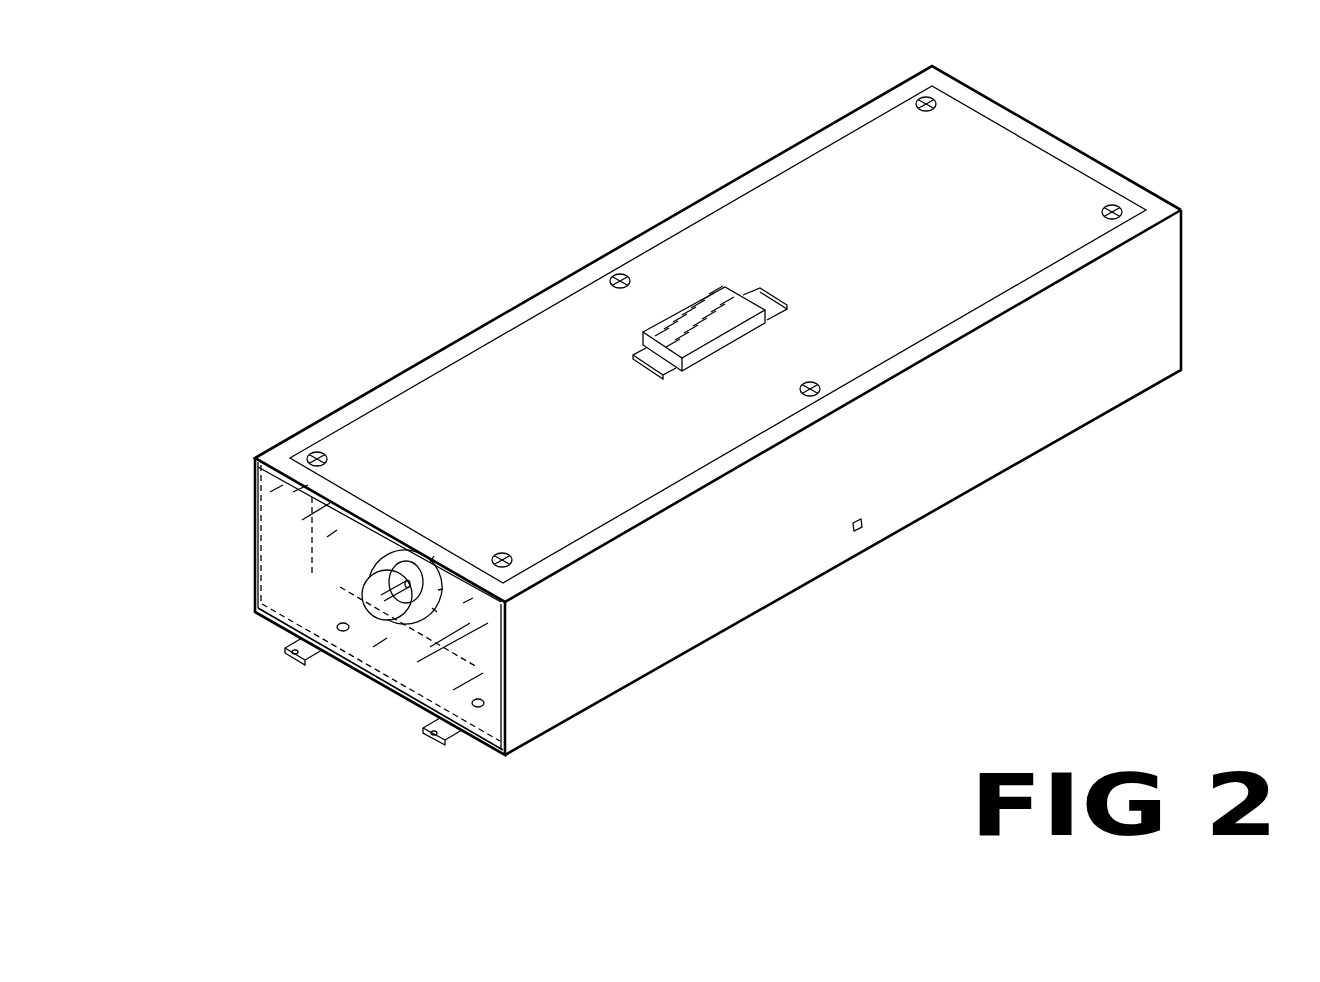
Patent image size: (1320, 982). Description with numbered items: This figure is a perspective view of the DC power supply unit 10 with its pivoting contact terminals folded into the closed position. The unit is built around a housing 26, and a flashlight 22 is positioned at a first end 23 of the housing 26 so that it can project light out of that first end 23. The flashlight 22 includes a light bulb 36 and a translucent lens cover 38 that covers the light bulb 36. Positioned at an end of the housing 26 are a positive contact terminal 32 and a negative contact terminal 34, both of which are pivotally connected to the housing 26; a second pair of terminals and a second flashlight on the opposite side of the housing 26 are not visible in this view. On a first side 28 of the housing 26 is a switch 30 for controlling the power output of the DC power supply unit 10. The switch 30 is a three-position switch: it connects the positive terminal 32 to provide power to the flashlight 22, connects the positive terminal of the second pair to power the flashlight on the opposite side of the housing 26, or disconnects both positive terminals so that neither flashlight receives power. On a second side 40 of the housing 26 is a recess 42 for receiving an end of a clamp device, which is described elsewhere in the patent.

The DC power supply unit 10 is at (417, 302).
The flashlight 22 is at (528, 772).
The first end 23 is at (257, 612).
The housing 26 is at (1000, 470).
The first side 28 is at (958, 211).
The switch 30 is at (695, 318).
The positive contact terminal 32 is at (297, 665).
The negative contact terminal 34 is at (433, 737).
The light bulb 36 is at (380, 595).
The translucent lens cover 38 is at (275, 510).
The second side 40 is at (1143, 298).
The recess 42 is at (860, 532).